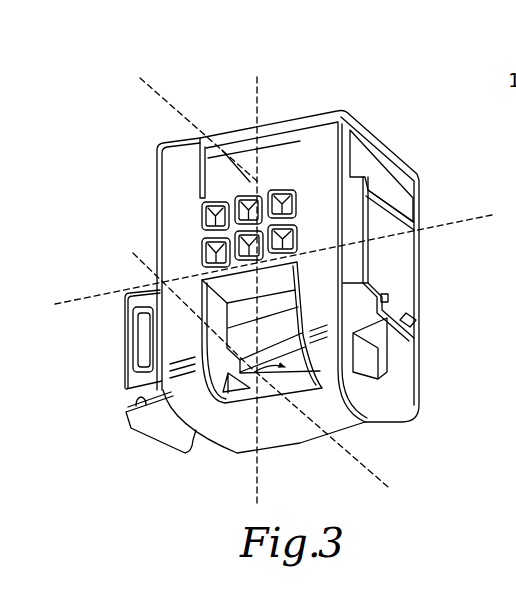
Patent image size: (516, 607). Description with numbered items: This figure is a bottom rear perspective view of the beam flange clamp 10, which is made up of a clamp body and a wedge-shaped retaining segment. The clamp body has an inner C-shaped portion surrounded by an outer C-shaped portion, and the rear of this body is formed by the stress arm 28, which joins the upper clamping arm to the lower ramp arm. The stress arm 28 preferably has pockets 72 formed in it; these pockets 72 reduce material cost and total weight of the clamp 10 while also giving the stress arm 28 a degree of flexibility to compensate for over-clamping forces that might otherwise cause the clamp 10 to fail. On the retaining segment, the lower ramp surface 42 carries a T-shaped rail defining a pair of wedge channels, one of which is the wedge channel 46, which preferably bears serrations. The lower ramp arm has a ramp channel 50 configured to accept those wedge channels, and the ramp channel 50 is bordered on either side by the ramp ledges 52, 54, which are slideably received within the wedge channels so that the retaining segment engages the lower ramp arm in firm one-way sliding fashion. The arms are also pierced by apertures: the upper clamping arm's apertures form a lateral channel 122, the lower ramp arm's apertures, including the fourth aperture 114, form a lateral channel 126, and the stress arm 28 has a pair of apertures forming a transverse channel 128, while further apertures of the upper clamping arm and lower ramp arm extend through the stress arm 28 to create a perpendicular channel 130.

The clamp 10 is at (318, 98).
The stress arm 28 is at (323, 282).
The lower ramp surface 42 is at (160, 440).
The wedge channel 46 is at (142, 396).
The ramp channel 50 is at (392, 310).
The ramp ledge 52 is at (410, 314).
The ramp ledge 54 is at (386, 295).
The pockets 72 is at (218, 210).
The fourth aperture 114 is at (205, 395).
The lateral channel 122 is at (161, 97).
The lateral channel 126 is at (147, 262).
The transverse channel 128 is at (104, 293).
The perpendicular channel 130 is at (256, 92).